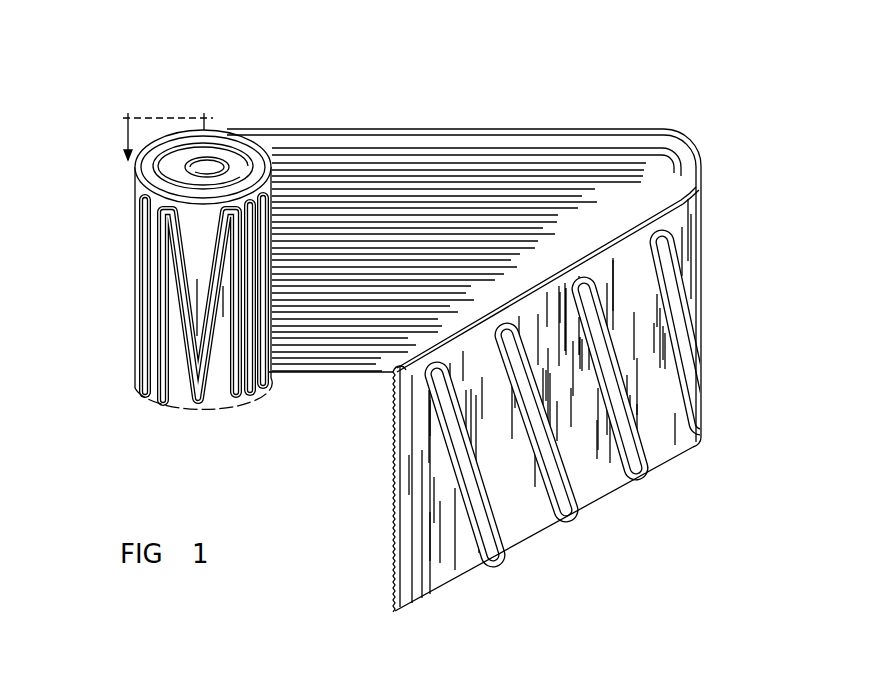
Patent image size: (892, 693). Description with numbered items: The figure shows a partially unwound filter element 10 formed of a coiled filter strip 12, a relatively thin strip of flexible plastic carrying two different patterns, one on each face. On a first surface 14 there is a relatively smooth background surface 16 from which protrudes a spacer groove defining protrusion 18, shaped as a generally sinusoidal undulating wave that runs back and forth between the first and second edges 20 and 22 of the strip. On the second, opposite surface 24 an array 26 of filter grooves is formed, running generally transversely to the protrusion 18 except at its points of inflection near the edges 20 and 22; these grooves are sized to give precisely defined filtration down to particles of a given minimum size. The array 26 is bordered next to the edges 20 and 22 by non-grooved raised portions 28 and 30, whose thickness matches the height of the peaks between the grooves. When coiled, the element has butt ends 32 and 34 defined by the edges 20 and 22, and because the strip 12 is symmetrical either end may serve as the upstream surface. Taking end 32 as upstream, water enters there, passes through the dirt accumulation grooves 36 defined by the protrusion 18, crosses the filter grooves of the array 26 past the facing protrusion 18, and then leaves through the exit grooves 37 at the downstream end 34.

The filter element 10 is at (262, 118).
The filter strip 12 is at (697, 223).
The first surface 14 is at (457, 570).
The background surface 16 is at (610, 490).
The spacer groove defining protrusion 18 is at (503, 572).
The first edge 20 is at (400, 362).
The second edge 22 is at (410, 603).
The second surface 24 is at (650, 185).
The array of filter grooves 26 is at (420, 203).
The non-grooved raised portion 28 is at (523, 140).
The non-grooved raised portion 30 is at (315, 363).
The butt end 32 is at (153, 172).
The butt end 34 is at (172, 398).
The dirt accumulation grooves 36 is at (622, 333).
The exit grooves 37 is at (223, 393).